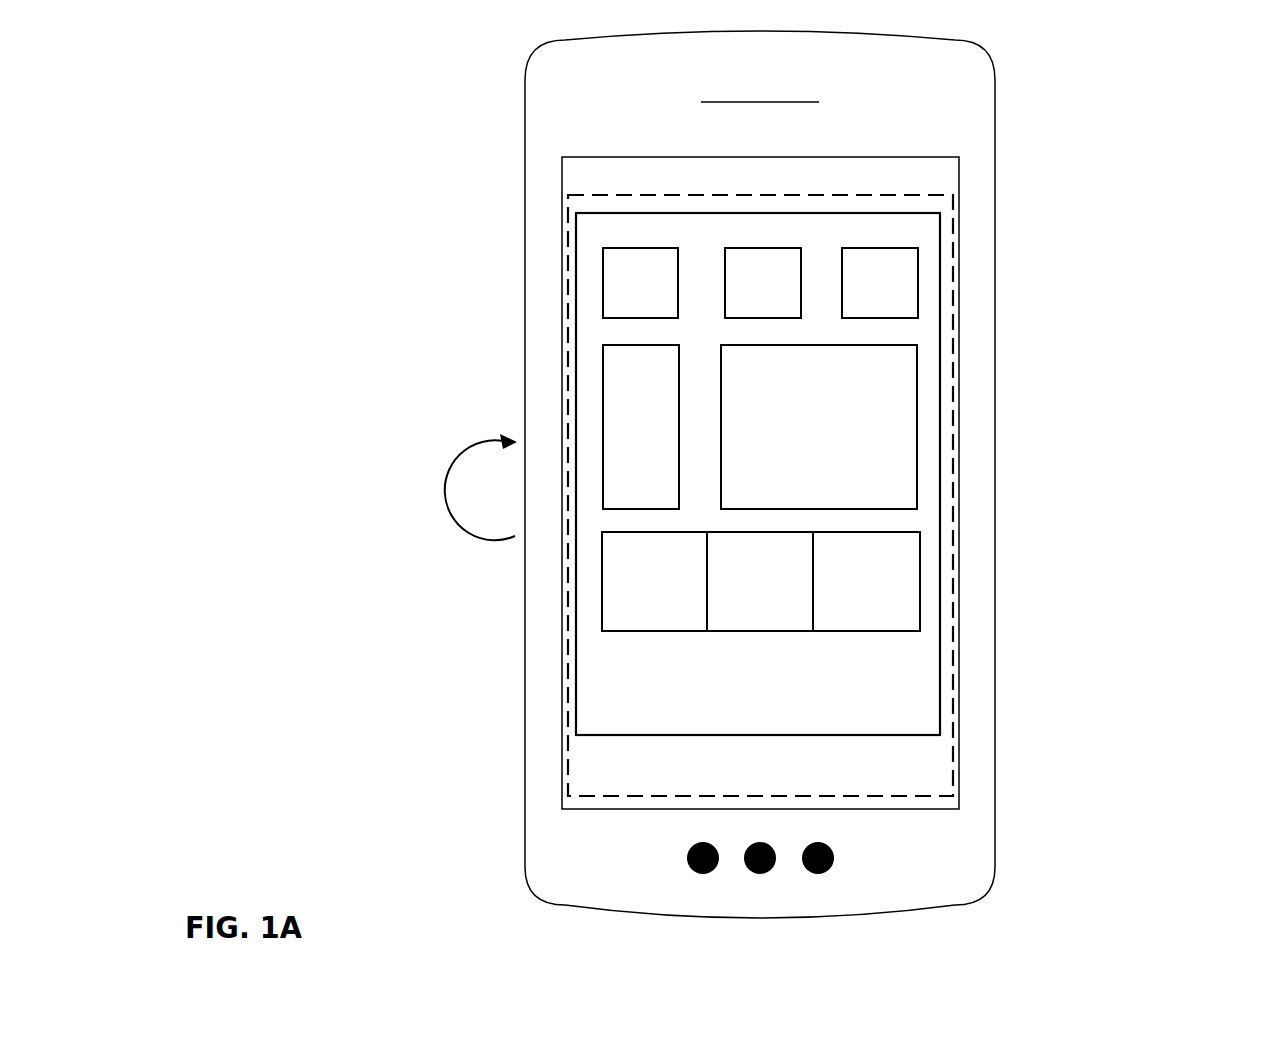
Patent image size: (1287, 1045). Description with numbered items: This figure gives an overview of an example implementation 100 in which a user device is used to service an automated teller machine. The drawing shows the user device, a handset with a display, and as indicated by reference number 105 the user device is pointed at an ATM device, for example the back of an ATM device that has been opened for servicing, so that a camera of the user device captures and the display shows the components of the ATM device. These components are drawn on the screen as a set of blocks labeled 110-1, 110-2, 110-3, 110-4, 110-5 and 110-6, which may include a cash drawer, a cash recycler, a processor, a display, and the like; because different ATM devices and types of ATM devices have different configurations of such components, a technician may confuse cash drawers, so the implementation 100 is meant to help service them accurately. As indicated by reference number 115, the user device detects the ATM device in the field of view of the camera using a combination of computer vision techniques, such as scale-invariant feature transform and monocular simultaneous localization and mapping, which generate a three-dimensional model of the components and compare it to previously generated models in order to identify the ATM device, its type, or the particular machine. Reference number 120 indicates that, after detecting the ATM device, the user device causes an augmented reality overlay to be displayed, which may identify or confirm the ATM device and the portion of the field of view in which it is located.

The example implementation 100 is at (299, 56).
The pointing of user device at ATM device 105 is at (940, 291).
The ATM device component 110-1 is at (613, 297).
The ATM device component 110-2 is at (735, 297).
The ATM device component 110-3 is at (850, 302).
The ATM device component 110-4 is at (613, 437).
The ATM device component 110-5 is at (779, 424).
The ATM device component 110-6 is at (690, 633).
The detection of ATM device in field of view 115 is at (347, 406).
The augmented reality overlay 120 is at (610, 800).